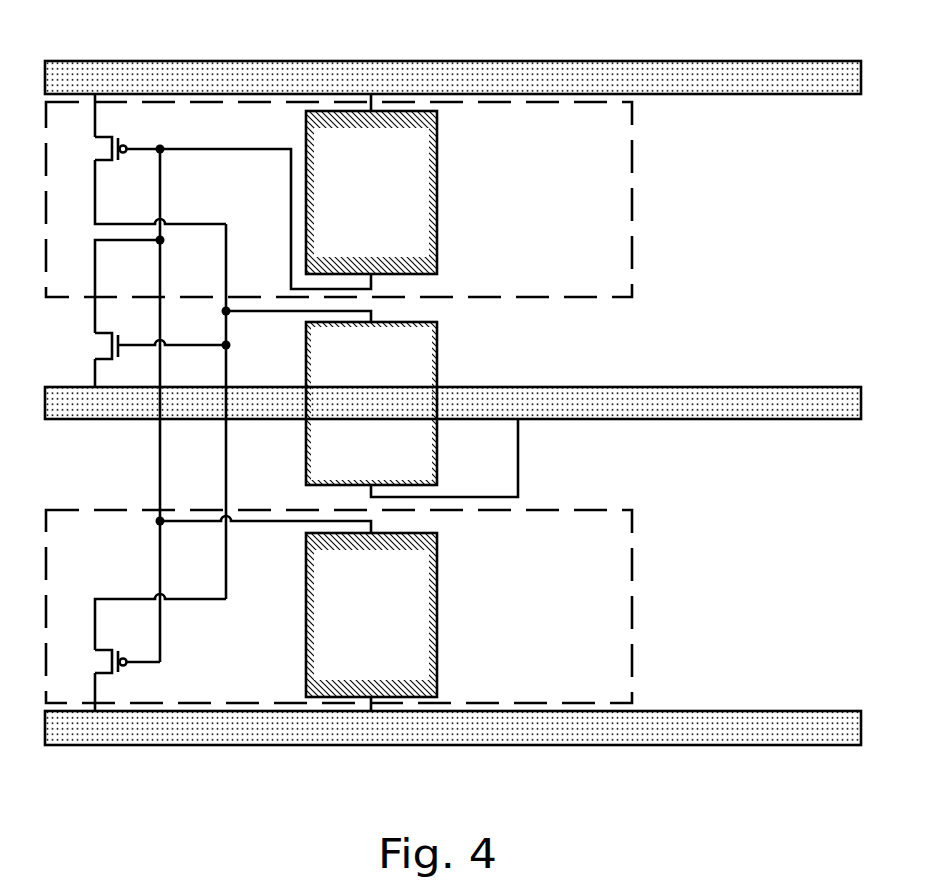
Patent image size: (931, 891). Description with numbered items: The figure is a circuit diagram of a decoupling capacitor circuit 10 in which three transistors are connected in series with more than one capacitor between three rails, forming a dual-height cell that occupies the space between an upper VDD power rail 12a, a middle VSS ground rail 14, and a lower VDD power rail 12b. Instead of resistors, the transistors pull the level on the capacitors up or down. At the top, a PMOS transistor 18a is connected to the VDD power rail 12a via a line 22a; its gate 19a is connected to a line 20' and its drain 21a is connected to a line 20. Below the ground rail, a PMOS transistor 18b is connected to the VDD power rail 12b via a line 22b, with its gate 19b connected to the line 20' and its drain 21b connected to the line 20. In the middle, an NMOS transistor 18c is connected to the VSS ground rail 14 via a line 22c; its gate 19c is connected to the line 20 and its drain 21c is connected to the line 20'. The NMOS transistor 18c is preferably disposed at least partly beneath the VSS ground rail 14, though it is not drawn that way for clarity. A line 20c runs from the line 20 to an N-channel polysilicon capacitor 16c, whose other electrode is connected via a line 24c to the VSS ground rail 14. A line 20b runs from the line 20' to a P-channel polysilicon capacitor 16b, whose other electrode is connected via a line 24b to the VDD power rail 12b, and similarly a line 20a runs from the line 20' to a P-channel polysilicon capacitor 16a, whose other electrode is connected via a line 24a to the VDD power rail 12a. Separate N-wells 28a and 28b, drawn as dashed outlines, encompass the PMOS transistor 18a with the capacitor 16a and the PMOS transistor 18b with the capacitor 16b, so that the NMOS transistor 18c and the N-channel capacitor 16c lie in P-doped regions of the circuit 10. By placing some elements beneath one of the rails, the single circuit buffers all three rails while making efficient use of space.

The circuit 10 is at (857, 789).
The VDD power rail 12a is at (453, 77).
The VDD power rail 12b is at (453, 728).
The VSS ground rail 14 is at (453, 403).
The P-channel polysilicon capacitor 16a is at (371, 192).
The P-channel polysilicon capacitor 16b is at (371, 615).
The N-channel polysilicon capacitor 16c is at (371, 403).
The PMOS transistor 18a is at (89, 150).
The PMOS transistor 18b is at (88, 663).
The NMOS transistor 18c is at (85, 346).
The gate 19a is at (141, 147).
The gate 19b is at (147, 663).
The gate 19c is at (139, 345).
The line 20 is at (244, 411).
The line 20' is at (141, 404).
The line 20a is at (265, 206).
The line 20b is at (264, 533).
The line 20c is at (297, 323).
The drain 21a is at (160, 192).
The drain 21b is at (160, 622).
The drain 21c is at (127, 286).
The line 22a is at (117, 116).
The line 22b is at (117, 692).
The line 22c is at (116, 373).
The line 24a is at (425, 108).
The line 24b is at (425, 700).
The line 24c is at (444, 458).
The N-well 28a is at (339, 199).
The N-well 28b is at (339, 606).